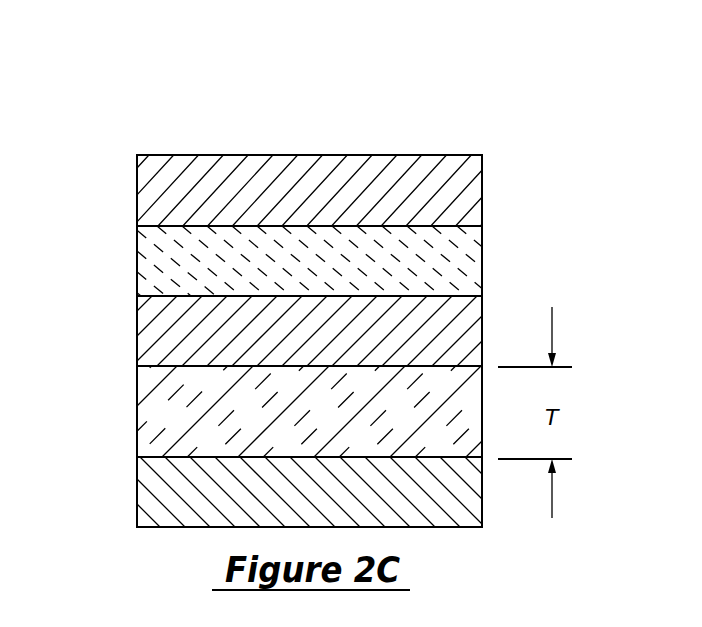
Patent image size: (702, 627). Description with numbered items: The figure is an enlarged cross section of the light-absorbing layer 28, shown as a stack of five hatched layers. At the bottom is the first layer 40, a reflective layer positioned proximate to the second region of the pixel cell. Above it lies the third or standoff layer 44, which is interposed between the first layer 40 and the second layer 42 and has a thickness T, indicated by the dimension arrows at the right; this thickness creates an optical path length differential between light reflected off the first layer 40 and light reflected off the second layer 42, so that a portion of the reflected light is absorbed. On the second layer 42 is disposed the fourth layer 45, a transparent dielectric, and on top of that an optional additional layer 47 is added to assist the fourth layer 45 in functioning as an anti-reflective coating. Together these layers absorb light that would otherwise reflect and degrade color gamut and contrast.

The light-absorbing layer 28 is at (483, 112).
The optional additional layer 47 is at (164, 192).
The fourth layer 45 is at (164, 258).
The second layer 42 is at (164, 334).
The third layer 44 is at (164, 413).
The first layer 40 is at (164, 497).